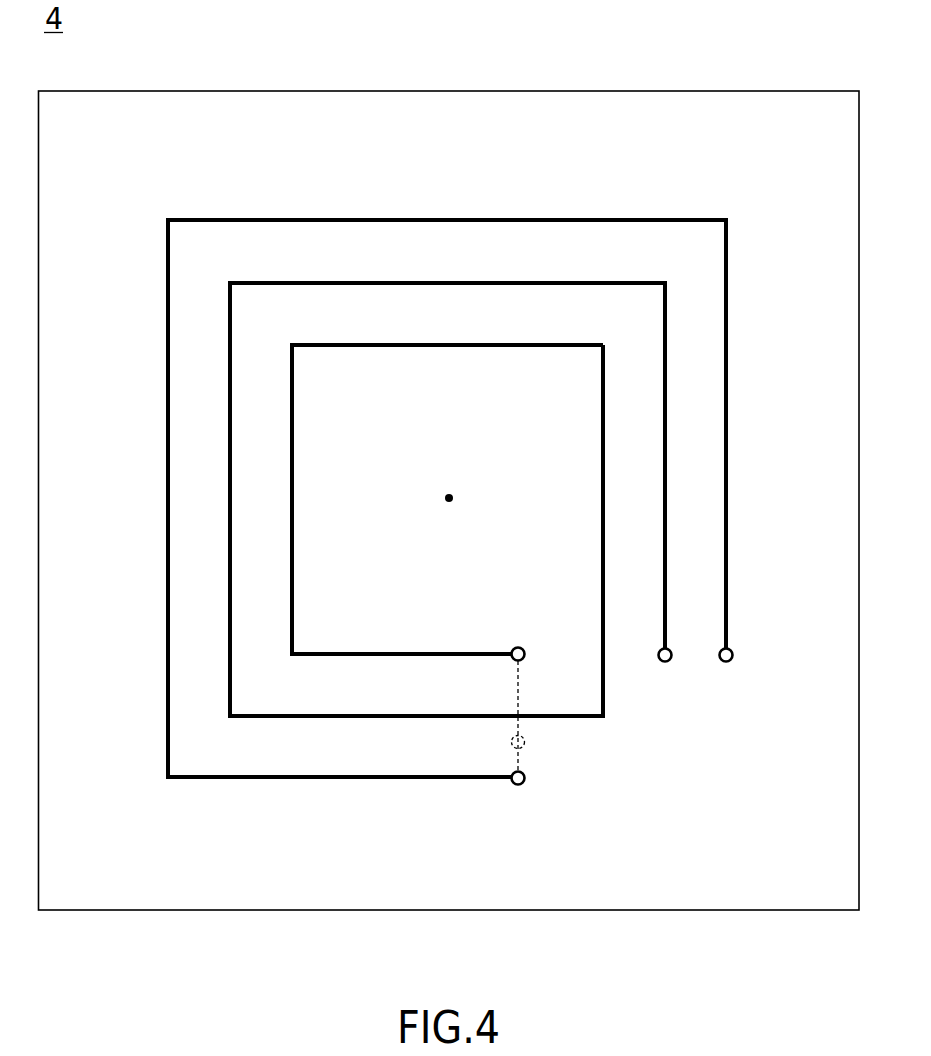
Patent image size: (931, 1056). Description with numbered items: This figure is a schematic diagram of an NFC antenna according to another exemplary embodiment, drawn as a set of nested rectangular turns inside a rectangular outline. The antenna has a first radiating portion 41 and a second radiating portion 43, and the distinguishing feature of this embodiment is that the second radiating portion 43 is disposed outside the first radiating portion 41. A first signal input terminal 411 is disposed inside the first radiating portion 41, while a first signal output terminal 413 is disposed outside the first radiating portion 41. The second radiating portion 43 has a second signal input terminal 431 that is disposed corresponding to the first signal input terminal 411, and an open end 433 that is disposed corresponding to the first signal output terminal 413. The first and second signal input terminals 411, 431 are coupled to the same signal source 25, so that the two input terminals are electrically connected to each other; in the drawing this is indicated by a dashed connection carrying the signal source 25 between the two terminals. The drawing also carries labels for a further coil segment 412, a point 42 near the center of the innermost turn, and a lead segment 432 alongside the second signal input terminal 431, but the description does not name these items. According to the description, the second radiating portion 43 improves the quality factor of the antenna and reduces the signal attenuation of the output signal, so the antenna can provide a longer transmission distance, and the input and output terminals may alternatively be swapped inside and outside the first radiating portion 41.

The first radiating portion 41 is at (506, 498).
The first signal input terminal 411 is at (524, 648).
The middle coil turn 412 is at (603, 453).
The first signal output terminal 413 is at (670, 648).
The center point 42 is at (450, 494).
The signal source 25 is at (511, 742).
The second radiating portion 43 is at (566, 771).
The second signal input terminal 431 is at (523, 784).
The second terminal lead 432 is at (455, 781).
The open end 433 is at (726, 662).